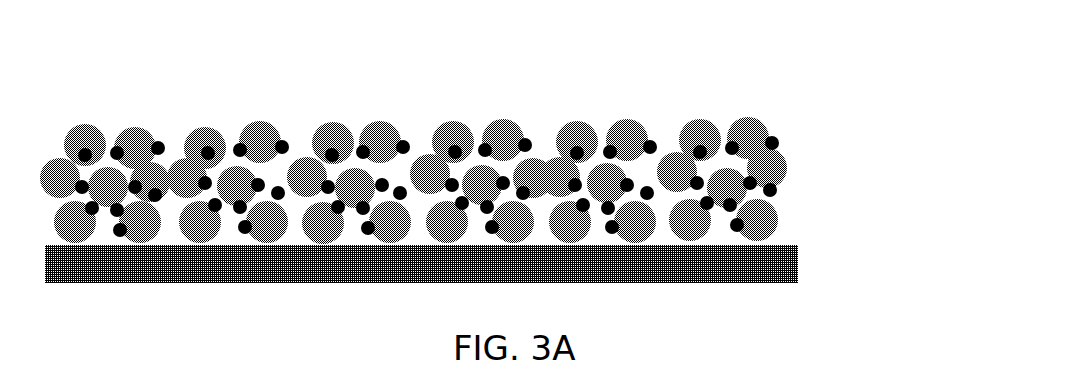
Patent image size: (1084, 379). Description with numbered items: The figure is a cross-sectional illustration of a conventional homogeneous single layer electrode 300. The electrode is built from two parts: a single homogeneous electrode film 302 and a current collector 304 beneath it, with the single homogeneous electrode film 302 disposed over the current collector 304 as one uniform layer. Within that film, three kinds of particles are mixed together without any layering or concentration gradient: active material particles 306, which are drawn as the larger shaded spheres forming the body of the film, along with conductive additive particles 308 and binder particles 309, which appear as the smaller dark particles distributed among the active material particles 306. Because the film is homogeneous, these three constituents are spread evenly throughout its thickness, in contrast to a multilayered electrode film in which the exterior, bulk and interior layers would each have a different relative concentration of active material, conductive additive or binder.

The homogeneous single layer electrode 300 is at (498, 147).
The single homogeneous electrode film 302 is at (498, 128).
The current collector 304 is at (798, 272).
The active material particles 306 is at (700, 119).
The conductive additive particles 308 is at (526, 138).
The binder particles 309 is at (402, 140).